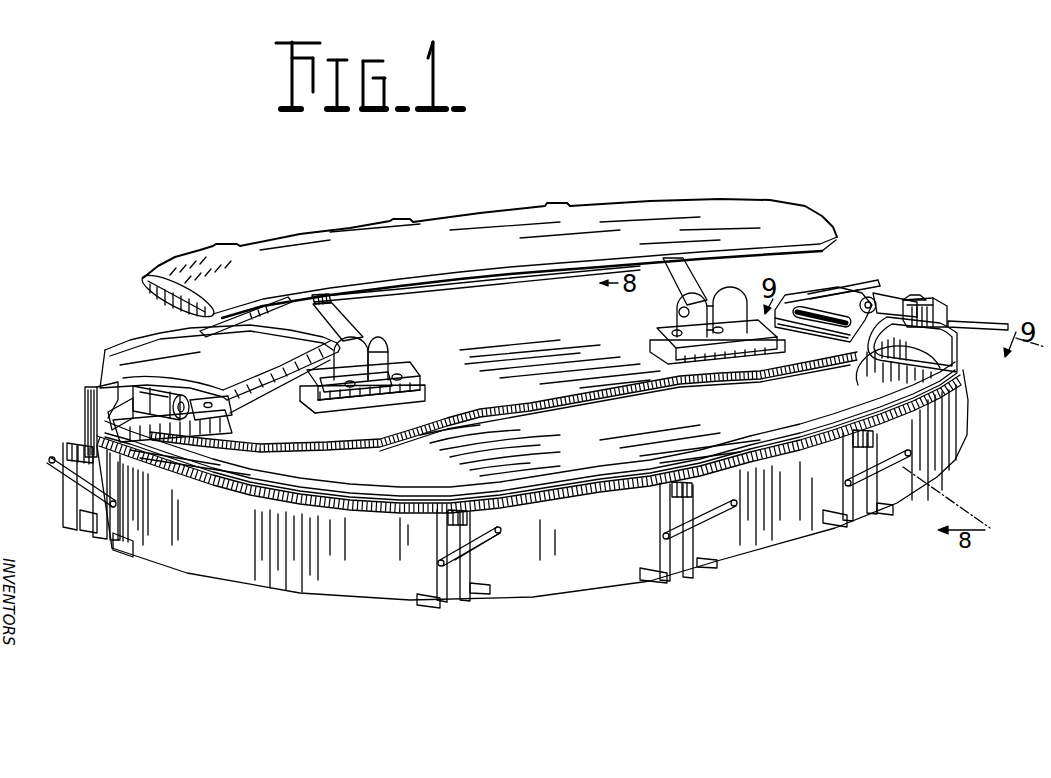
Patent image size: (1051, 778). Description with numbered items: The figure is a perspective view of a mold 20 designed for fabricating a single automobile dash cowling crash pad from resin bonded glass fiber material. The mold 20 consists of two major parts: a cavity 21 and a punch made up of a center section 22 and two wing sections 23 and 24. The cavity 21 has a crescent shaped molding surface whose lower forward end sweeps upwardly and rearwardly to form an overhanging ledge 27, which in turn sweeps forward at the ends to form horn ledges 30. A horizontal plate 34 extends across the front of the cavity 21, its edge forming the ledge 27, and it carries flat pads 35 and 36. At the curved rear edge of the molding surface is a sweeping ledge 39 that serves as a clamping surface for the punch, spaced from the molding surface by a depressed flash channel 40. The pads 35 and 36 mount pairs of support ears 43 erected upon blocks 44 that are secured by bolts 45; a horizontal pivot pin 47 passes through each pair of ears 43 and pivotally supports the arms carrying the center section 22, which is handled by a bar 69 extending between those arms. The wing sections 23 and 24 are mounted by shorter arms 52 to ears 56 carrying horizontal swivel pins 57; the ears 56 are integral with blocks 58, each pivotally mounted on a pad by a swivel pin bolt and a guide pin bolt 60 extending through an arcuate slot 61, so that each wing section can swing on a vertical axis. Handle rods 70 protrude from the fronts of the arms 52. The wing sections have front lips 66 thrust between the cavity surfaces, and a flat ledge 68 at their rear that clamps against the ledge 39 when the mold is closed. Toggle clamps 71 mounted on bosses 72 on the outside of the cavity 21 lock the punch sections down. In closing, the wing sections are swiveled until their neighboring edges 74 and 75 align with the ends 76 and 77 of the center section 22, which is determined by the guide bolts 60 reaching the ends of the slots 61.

The mold 20 is at (70, 305).
The cavity 21 is at (250, 574).
The center section 22 is at (758, 205).
The wing section 23 is at (150, 331).
The wing section 24 is at (917, 294).
The overhanging ledge 27 is at (535, 400).
The horn ledges 30 is at (232, 442).
The horizontal plate 34 is at (545, 360).
The flat pad 35 is at (372, 414).
The flat pad 36 is at (672, 356).
The sweeping ledge 39 is at (575, 488).
The flash channel 40 is at (412, 496).
The support ears 43 is at (392, 366).
The blocks 44 is at (408, 376).
The bolts 45 is at (352, 387).
The horizontal pivot pin 47 is at (678, 311).
The arms 52 is at (934, 300).
The ears 56 is at (852, 296).
The horizontal swivel pins 57 is at (890, 286).
The block 58 is at (797, 300).
The guide pin bolt 60 is at (851, 332).
The arcuate slot 61 is at (813, 338).
The front lips 66 is at (900, 396).
The flat ledge 68 is at (960, 377).
The bar 69 is at (458, 296).
The handle rods 70 is at (236, 313).
The toggle clamps 71 is at (125, 508).
The bosses 72 is at (469, 512).
The edge of wing section 74 is at (273, 384).
The edge of wing section 75 is at (953, 364).
The end of center punch section 76 is at (143, 288).
The end of center punch section 77 is at (838, 237).